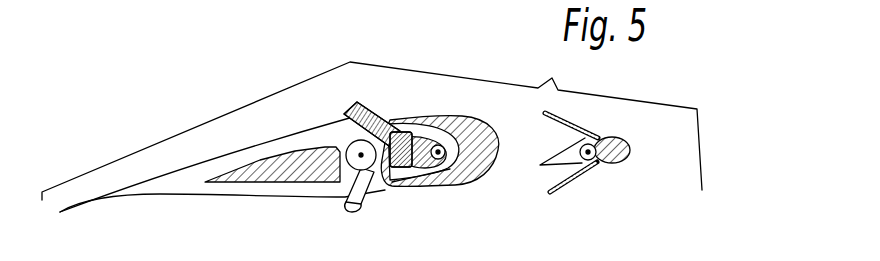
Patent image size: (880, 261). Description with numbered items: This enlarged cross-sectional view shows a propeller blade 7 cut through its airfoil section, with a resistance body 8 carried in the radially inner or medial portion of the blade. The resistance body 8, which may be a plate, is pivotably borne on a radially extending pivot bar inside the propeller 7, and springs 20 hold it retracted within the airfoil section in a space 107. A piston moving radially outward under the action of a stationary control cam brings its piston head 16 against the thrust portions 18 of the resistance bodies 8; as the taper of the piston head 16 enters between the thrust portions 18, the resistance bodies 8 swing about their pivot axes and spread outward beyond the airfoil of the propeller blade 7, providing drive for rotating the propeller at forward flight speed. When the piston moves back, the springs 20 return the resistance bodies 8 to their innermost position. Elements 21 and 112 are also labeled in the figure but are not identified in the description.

The propeller blade 7 is at (272, 168).
The resistance body 8 is at (363, 106).
The piston head 16 is at (340, 188).
The thrust portion 18 is at (373, 126).
The spring 20 is at (418, 128).
The pivot 21 is at (463, 170).
The space 107 is at (173, 182).
The guide member 112 is at (403, 173).